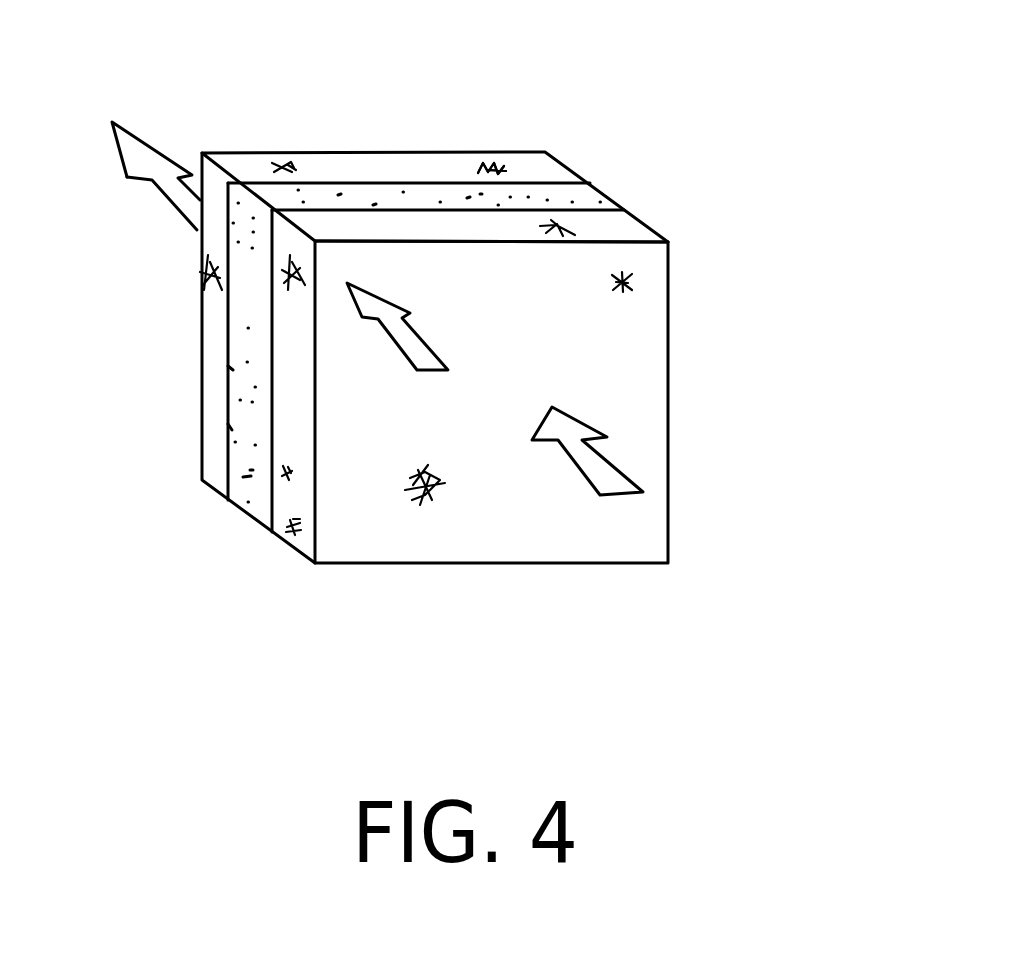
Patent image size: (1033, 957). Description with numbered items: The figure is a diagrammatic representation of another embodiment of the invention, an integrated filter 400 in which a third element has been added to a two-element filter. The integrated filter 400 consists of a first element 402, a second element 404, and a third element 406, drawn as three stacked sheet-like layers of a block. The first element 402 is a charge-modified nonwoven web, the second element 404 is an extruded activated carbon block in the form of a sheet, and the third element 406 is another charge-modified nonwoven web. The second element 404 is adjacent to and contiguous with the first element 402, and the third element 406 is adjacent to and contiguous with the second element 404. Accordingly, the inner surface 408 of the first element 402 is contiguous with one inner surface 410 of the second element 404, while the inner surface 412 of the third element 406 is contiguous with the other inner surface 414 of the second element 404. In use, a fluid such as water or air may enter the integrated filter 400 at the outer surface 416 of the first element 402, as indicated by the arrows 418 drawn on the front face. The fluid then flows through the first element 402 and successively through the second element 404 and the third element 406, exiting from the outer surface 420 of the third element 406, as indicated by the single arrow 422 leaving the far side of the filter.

The integrated filter 400 is at (700, 473).
The first element 402 is at (623, 230).
The second element 404 is at (597, 200).
The third element 406 is at (527, 167).
The inner surface of the first element 408 is at (295, 208).
The inner surface of the second element 410 is at (312, 212).
The inner surface of the third element 412 is at (350, 185).
The other inner surface of the second element 414 is at (428, 182).
The outer surface of the first element 416 is at (607, 308).
The arrows 418 is at (413, 352).
The outer surface of the third element 420 is at (512, 167).
The arrow 422 is at (135, 158).